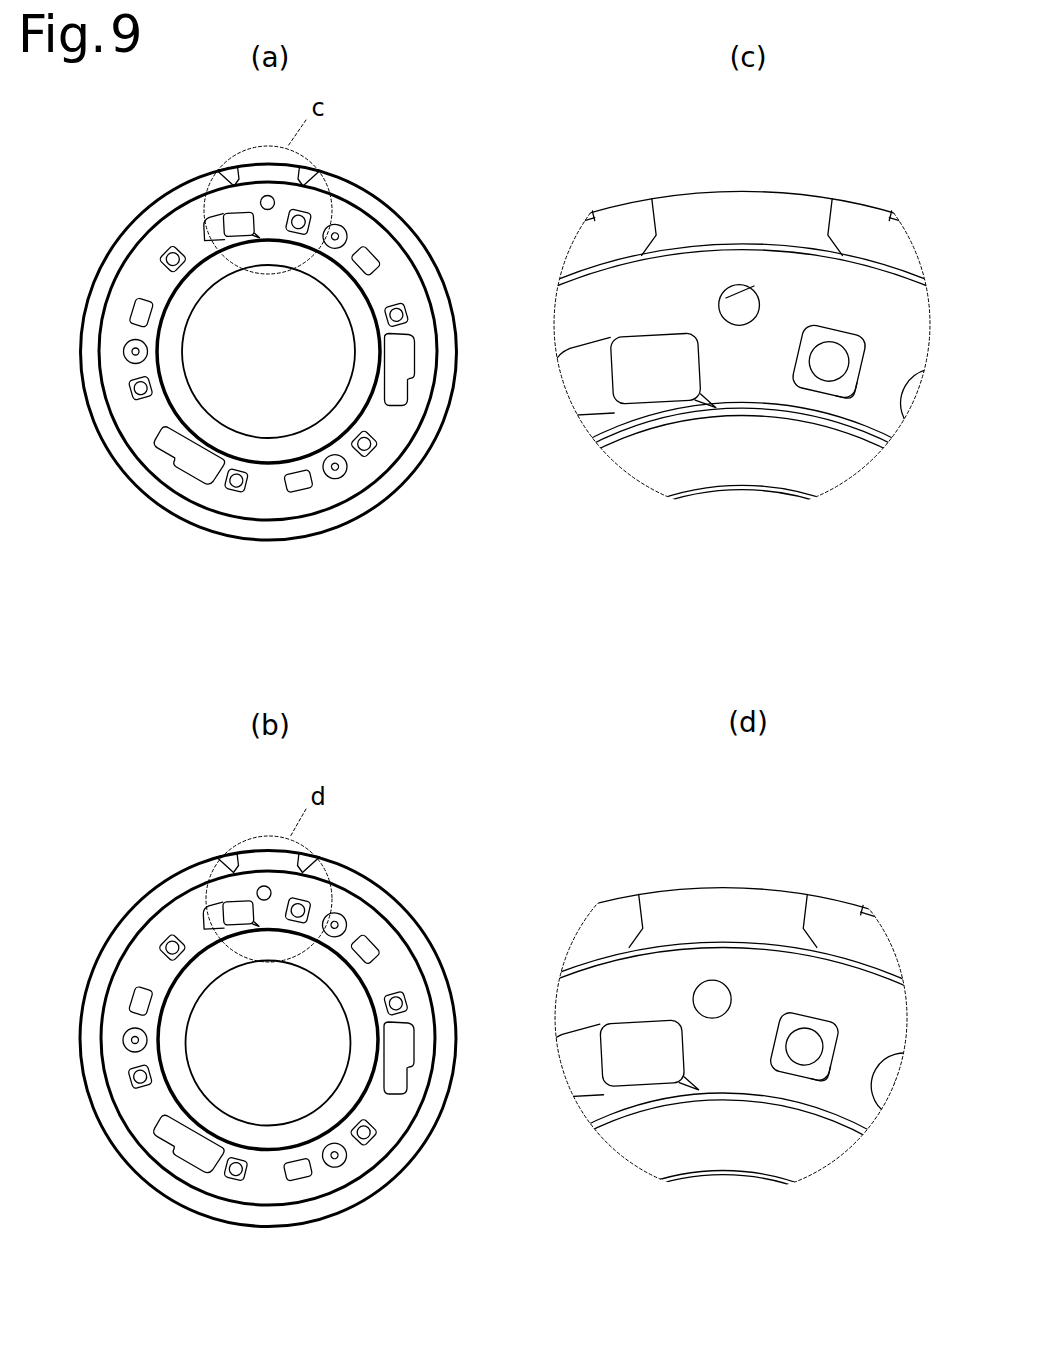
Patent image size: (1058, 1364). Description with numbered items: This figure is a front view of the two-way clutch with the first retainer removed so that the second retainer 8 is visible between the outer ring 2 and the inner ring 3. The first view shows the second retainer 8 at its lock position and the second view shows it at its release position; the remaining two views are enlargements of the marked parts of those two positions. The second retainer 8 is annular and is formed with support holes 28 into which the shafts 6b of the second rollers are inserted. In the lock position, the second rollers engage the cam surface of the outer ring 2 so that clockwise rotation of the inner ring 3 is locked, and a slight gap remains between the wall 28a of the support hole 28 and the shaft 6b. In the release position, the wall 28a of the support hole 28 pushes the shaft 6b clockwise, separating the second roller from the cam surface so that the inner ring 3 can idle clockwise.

The outer ring 2 is at (394, 221).
The inner ring 3 is at (337, 283).
The second retainer 8 is at (418, 296).
The support hole 28 is at (297, 219).
The wall of the support hole 28a is at (857, 385).
The shaft of the second roller 6b is at (327, 228).